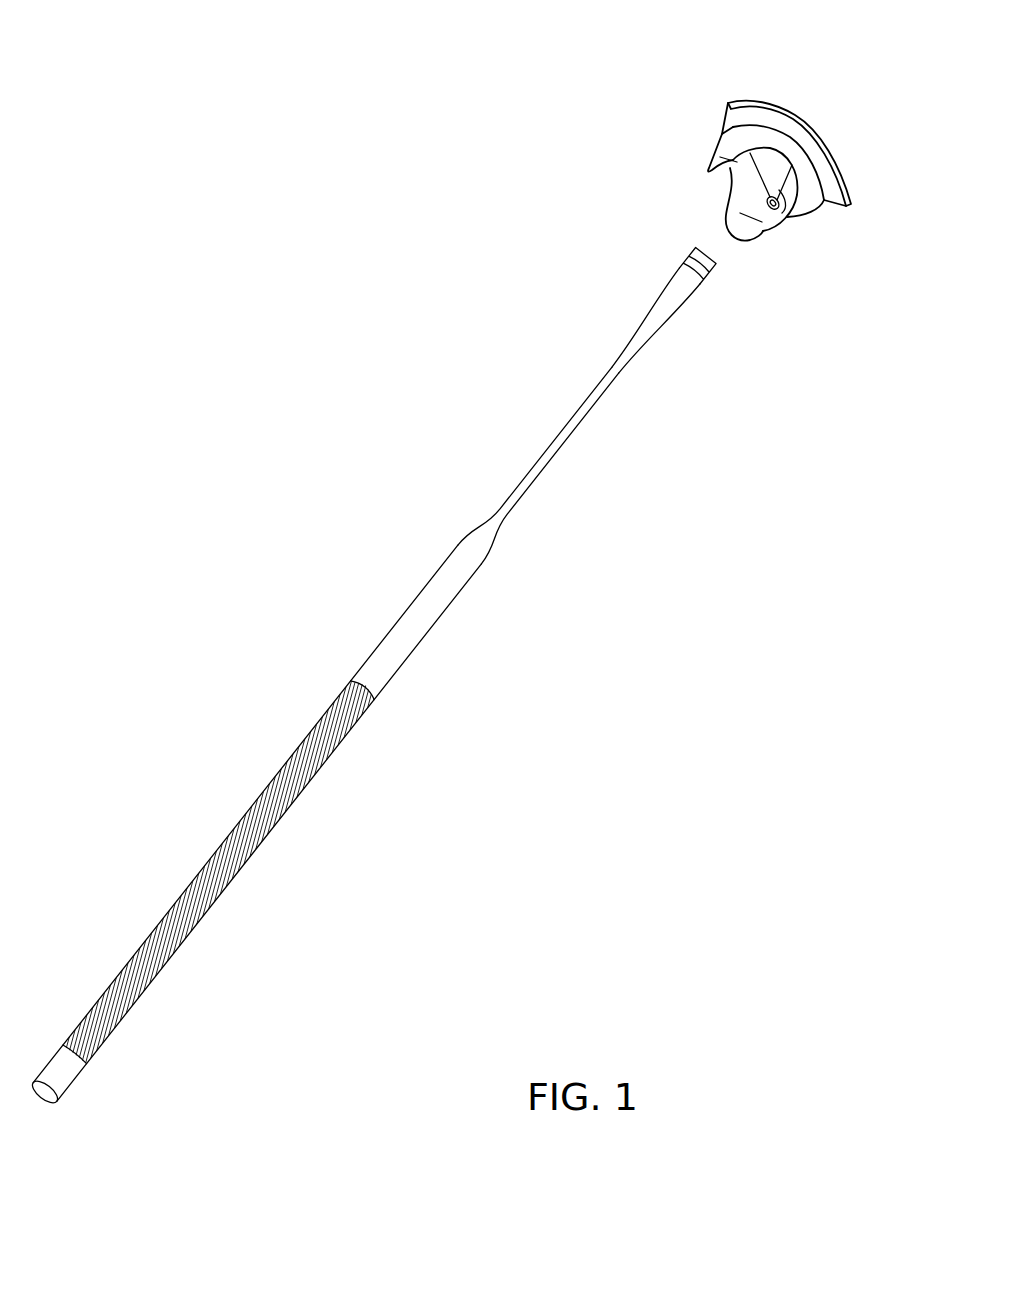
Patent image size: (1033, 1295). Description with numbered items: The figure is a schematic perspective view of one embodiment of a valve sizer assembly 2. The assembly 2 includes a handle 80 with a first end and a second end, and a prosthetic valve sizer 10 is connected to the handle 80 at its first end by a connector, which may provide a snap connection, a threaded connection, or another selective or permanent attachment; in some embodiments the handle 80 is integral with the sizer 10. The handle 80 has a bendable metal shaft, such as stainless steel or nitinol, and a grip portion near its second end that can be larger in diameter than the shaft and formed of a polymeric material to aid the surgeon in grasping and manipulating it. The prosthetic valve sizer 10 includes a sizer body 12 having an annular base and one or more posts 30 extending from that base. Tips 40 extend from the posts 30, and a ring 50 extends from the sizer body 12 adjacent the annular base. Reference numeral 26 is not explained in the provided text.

The valve sizer assembly 2 is at (450, 172).
The prosthetic valve sizer 10 is at (805, 88).
The sizer body 12 is at (720, 143).
The strut 26 is at (765, 224).
The post 30 is at (793, 214).
The tip 40 is at (710, 173).
The ring 50 is at (833, 153).
The handle 80 is at (446, 670).